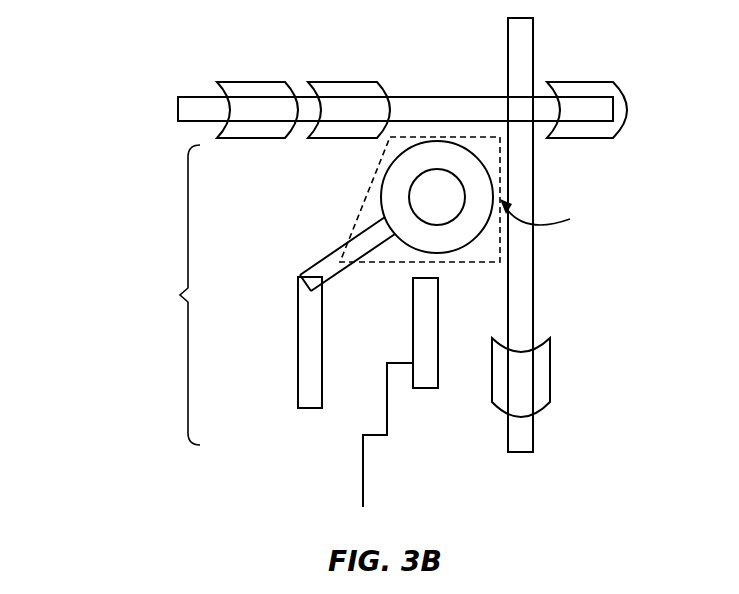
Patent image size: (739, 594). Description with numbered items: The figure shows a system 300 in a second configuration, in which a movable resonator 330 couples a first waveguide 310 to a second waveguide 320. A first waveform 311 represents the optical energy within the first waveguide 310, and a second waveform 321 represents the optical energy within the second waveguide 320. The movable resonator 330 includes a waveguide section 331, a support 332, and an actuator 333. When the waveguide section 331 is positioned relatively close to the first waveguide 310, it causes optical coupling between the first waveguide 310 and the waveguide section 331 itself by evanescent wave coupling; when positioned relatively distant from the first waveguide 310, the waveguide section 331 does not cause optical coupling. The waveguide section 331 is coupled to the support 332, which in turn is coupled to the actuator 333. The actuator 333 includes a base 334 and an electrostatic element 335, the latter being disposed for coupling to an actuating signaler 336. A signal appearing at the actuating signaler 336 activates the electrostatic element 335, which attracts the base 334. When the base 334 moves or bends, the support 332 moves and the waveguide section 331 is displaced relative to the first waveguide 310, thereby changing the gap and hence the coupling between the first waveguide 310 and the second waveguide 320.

The system 300 is at (84, 154).
The first waveguide 310 is at (452, 105).
The first waveform 311 is at (330, 80).
The second waveguide 320 is at (530, 275).
The second waveform 321 is at (545, 375).
The movable resonator 330 is at (171, 295).
The waveguide section 331 is at (462, 233).
The support 332 is at (338, 253).
The actuator 333 is at (422, 308).
The base 334 is at (307, 338).
The electrostatic element 335 is at (372, 205).
The actuating signaler 336 is at (363, 465).